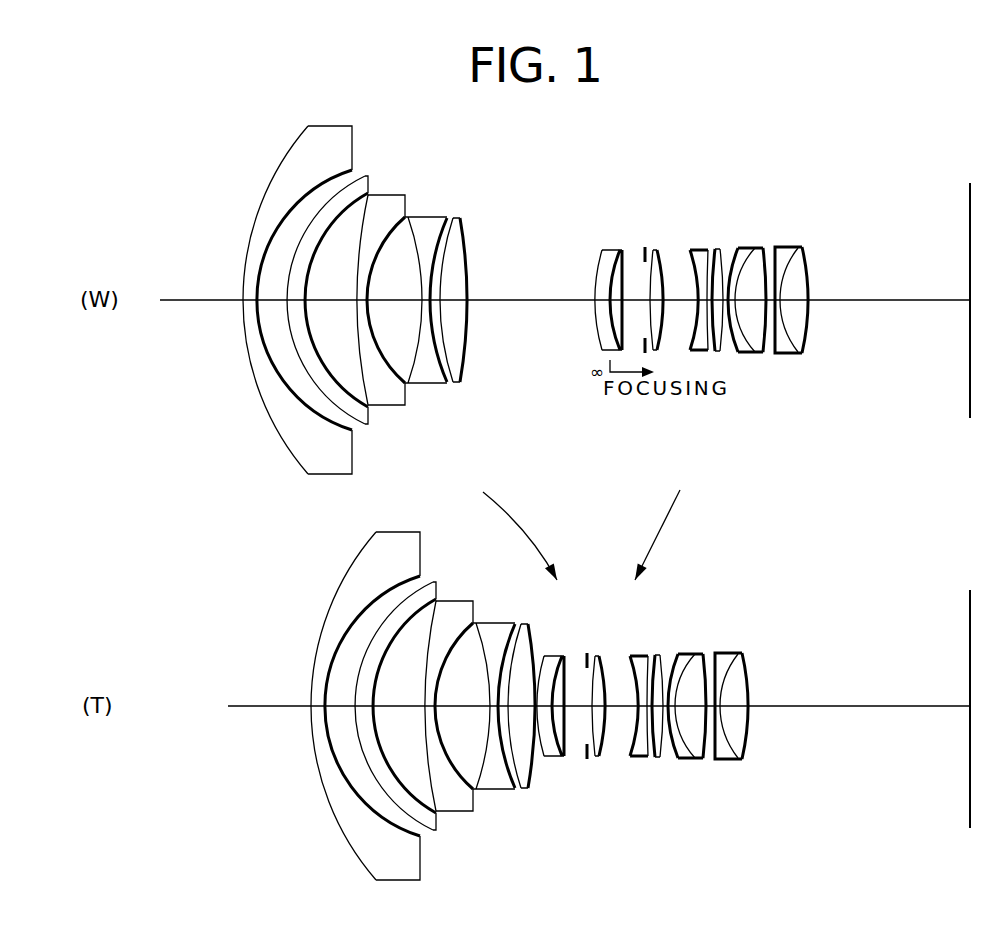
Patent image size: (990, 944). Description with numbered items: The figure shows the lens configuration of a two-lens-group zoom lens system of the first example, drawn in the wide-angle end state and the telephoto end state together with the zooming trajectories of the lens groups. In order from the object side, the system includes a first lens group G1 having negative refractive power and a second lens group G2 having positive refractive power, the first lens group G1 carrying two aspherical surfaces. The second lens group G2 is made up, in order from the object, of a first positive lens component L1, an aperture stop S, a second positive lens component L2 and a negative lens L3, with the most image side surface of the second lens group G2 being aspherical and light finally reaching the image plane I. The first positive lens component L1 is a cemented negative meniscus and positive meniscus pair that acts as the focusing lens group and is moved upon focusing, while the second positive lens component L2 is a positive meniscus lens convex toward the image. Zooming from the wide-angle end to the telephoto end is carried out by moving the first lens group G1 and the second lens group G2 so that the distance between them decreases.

The first lens group G1 is at (473, 473).
The second lens group G2 is at (686, 458).
The first positive lens component L1 is at (625, 352).
The second positive lens component L2 is at (655, 247).
The negative lens L3 is at (698, 248).
The aperture stop S is at (645, 250).
The image plane I is at (970, 212).